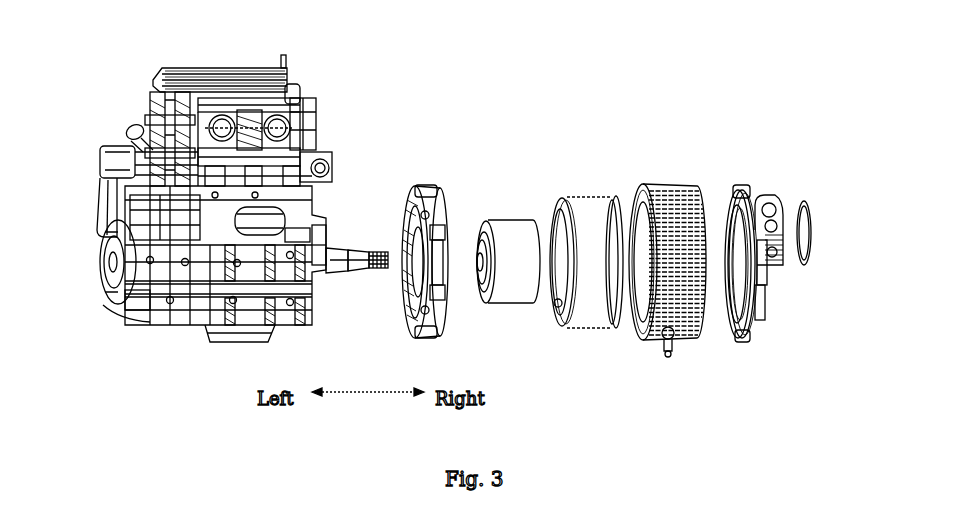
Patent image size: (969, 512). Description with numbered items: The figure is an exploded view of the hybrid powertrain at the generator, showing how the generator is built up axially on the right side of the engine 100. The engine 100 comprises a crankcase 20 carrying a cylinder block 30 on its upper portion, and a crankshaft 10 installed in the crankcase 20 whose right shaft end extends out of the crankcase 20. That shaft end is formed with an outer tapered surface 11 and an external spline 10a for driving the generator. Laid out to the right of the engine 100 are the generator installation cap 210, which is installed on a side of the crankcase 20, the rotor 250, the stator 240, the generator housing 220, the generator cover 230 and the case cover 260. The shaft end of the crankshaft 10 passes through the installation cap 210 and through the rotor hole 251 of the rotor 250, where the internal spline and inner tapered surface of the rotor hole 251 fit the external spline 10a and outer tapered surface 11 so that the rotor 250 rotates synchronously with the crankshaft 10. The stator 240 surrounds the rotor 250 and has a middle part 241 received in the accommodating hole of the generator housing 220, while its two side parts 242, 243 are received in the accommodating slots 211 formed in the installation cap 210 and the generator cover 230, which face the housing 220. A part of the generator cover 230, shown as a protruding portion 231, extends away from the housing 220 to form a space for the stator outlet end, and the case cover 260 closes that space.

The engine 100 is at (325, 106).
The cylinder block 30 is at (104, 180).
The crankcase 20 is at (133, 298).
The outer tapered surface 11 is at (337, 244).
The crankshaft 10 is at (368, 249).
The external spline 10a is at (380, 273).
The generator installation cap 210 is at (443, 198).
The accommodating slot 211 is at (405, 273).
The rotor 250 is at (536, 220).
The rotor hole 251 is at (475, 270).
The stator 240 is at (592, 197).
The side part of the stator 242 is at (562, 320).
The middle part of the stator 241 is at (592, 327).
The side part of the stator 243 is at (618, 320).
The generator housing 220 is at (662, 183).
The generator cover 230 is at (766, 311).
The boss 231 is at (750, 198).
The case cover 260 is at (813, 230).